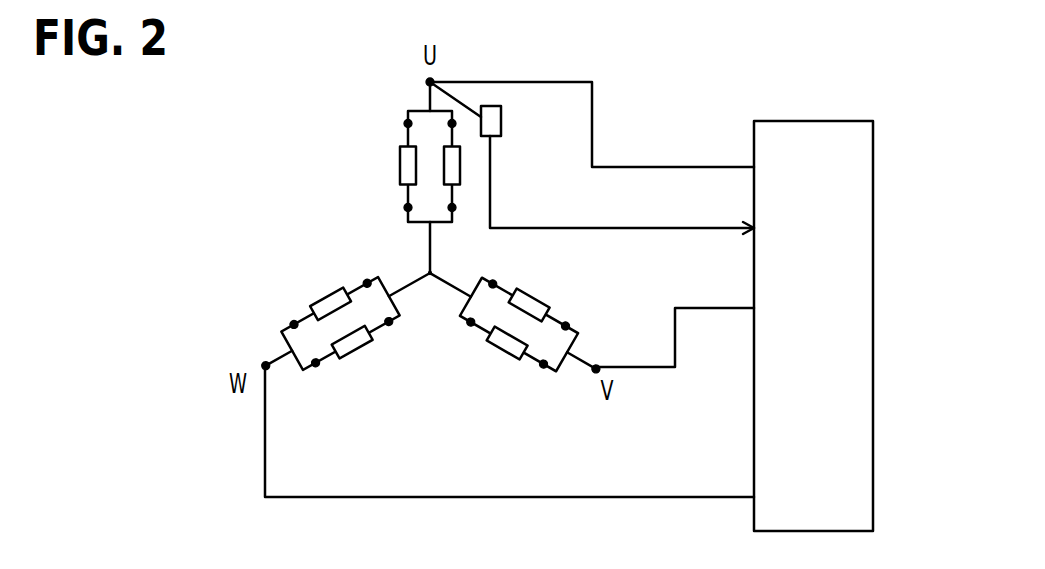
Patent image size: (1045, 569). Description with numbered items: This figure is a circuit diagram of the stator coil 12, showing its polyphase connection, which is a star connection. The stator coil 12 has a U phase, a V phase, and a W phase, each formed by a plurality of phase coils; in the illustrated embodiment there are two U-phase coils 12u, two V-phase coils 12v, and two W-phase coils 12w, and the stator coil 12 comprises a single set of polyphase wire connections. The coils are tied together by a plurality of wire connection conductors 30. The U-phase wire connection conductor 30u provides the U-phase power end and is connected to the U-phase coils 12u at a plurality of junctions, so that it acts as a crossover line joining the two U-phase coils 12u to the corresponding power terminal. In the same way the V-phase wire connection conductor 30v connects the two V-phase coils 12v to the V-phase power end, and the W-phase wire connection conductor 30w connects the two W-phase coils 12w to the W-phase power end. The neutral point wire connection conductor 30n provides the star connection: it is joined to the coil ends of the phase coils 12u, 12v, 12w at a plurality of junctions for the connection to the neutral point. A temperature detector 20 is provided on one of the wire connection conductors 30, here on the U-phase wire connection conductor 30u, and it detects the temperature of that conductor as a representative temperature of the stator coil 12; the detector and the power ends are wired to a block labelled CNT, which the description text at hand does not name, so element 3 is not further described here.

The controller 3 is at (873, 237).
The stator coil 12 is at (290, 128).
The U-phase coils 12u is at (400, 164).
The V-phase coils 12v is at (533, 296).
The W-phase coils 12w is at (327, 295).
The temperature detector 20 is at (501, 120).
The wire connection conductors 30 is at (298, 210).
The U-phase wire connection conductor 30u is at (335, 161).
The V-phase wire connection conductor 30v is at (514, 336).
The W-phase wire connection conductor 30w is at (321, 309).
The neutral point wire connection conductor 30n is at (440, 284).